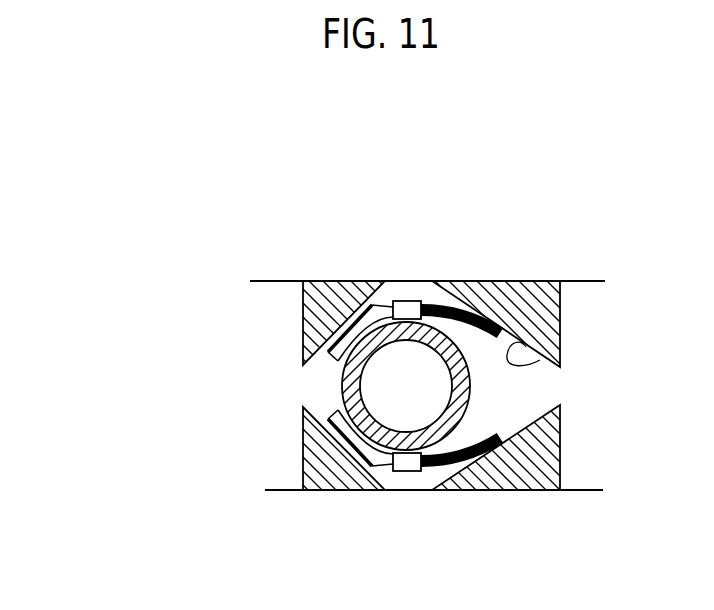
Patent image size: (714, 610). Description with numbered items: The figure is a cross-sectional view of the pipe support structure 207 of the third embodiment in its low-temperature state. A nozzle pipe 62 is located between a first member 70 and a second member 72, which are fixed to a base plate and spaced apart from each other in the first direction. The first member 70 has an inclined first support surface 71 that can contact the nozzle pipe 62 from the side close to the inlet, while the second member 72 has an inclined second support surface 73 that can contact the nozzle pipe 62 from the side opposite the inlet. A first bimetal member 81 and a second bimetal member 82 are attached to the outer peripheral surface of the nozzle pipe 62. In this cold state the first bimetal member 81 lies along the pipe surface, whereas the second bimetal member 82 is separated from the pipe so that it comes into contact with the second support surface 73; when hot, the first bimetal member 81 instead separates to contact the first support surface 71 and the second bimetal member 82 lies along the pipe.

The support structure 207 is at (105, 178).
The first member 70 is at (339, 290).
The second member 72 is at (515, 300).
The nozzle pipe 62 is at (343, 383).
The first bimetal member 81 is at (375, 308).
The second bimetal member 82 is at (446, 305).
The first support surface 71 is at (342, 344).
The second support surface 73 is at (540, 360).